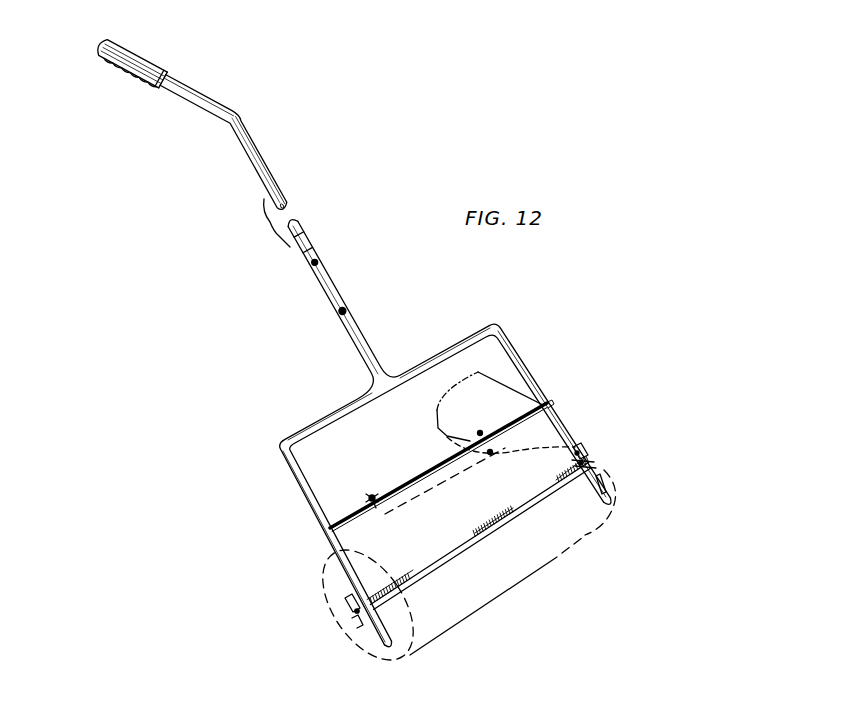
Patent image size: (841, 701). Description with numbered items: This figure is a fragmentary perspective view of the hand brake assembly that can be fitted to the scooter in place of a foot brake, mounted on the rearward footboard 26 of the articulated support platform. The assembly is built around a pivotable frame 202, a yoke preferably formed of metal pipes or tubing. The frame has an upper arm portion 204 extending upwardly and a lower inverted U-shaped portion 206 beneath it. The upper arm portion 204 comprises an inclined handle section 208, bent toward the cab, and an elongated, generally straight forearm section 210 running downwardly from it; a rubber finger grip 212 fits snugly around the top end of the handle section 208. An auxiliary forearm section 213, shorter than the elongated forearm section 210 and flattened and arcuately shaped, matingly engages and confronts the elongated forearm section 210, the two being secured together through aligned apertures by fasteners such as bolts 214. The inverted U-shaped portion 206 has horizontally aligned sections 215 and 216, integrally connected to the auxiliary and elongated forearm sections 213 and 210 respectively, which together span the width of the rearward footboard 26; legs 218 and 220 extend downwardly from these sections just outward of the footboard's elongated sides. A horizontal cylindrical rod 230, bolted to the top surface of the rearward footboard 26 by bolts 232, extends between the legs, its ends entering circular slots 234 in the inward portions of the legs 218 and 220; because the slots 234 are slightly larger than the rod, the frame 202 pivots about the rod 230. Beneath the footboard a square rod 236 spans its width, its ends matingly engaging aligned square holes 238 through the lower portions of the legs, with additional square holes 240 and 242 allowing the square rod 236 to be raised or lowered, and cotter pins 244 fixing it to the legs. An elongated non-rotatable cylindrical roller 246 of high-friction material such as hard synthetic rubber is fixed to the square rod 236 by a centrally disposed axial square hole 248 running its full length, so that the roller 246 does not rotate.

The pivotable frame 202 is at (402, 362).
The upper arm portion 204 is at (241, 117).
The lower inverted U-shaped portion 206 is at (277, 444).
The inclined handle section 208 is at (193, 106).
The elongated forearm section 210 is at (328, 264).
The rubber finger grip 212 is at (110, 68).
The auxiliary forearm section 213 is at (324, 288).
The bolts 214 is at (340, 313).
The horizontal section 215 is at (328, 406).
The horizontal section 216 is at (476, 330).
The leg 218 is at (300, 512).
The leg 220 is at (523, 343).
The rearward footboard 26 is at (438, 422).
The horizontal cylindrical rod 230 is at (413, 470).
The bolts 232 is at (374, 504).
The circular slots 234 is at (560, 403).
The square rod 236 is at (441, 546).
The square holes 238 is at (582, 467).
The additional square hole 240 is at (587, 457).
The additional square hole 242 is at (617, 491).
The cotter pins 244 is at (350, 612).
The cylindrical roller 246 is at (557, 556).
The axial square hole 248 is at (518, 516).